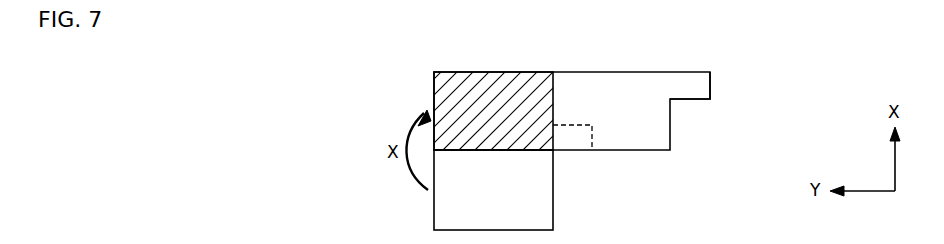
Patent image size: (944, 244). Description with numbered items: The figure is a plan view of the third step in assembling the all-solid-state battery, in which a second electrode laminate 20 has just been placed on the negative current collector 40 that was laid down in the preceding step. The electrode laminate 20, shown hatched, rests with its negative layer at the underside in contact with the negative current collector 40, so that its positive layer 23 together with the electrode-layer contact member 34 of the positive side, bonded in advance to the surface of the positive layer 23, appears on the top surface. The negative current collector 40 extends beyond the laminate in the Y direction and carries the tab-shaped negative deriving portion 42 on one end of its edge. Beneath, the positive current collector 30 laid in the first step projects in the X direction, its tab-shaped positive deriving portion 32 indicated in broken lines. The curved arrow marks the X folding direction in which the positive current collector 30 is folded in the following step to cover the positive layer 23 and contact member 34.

The electrode laminate 20 is at (480, 100).
The positive layer 23 is at (480, 100).
The electrode-layer contact member 34 is at (434, 100).
The positive current collector 30 is at (553, 190).
The positive deriving portion 32 is at (592, 137).
The negative current collector 40 is at (670, 125).
The negative deriving portion 42 is at (710, 85).